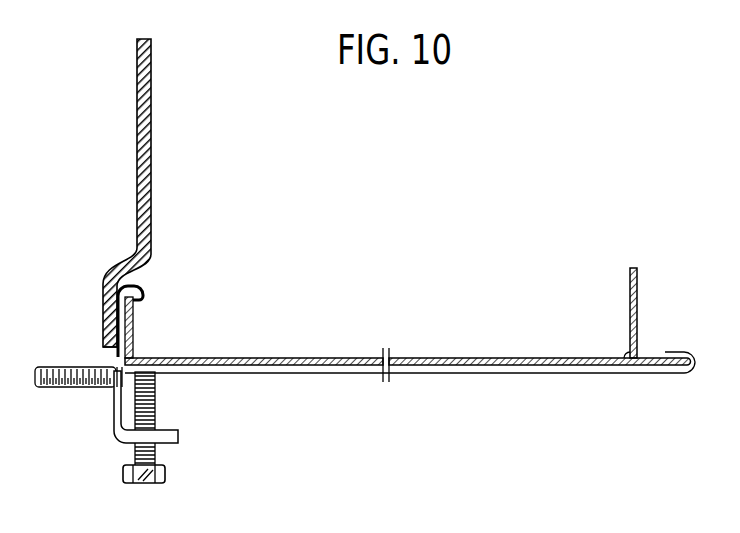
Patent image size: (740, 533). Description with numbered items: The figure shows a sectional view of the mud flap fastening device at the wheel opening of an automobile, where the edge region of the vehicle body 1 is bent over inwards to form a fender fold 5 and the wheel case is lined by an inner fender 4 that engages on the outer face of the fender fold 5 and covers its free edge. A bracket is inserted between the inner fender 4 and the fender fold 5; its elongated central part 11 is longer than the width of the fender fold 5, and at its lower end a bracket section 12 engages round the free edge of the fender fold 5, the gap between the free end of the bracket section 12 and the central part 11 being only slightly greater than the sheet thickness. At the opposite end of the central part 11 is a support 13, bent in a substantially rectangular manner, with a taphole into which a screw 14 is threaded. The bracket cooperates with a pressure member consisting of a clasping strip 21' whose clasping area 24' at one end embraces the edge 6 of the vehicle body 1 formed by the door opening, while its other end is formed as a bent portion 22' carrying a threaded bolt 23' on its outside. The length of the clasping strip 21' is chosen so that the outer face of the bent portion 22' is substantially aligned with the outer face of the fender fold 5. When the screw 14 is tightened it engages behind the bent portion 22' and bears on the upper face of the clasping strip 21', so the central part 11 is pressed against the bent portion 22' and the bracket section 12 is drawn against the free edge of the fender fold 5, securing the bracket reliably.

The inner fender 4 is at (137, 104).
The central part 11 is at (108, 351).
The bracket section 12 is at (141, 294).
The fender fold 5 is at (134, 322).
The vehicle body 1 is at (445, 359).
The clasping strip 21' is at (404, 394).
The clasping area 24' is at (684, 396).
The edge of vehicle body 6 is at (682, 354).
The threaded bolt 23' is at (74, 398).
The bent portion 22' is at (101, 398).
The support 13 is at (180, 441).
The screw 14 is at (152, 485).